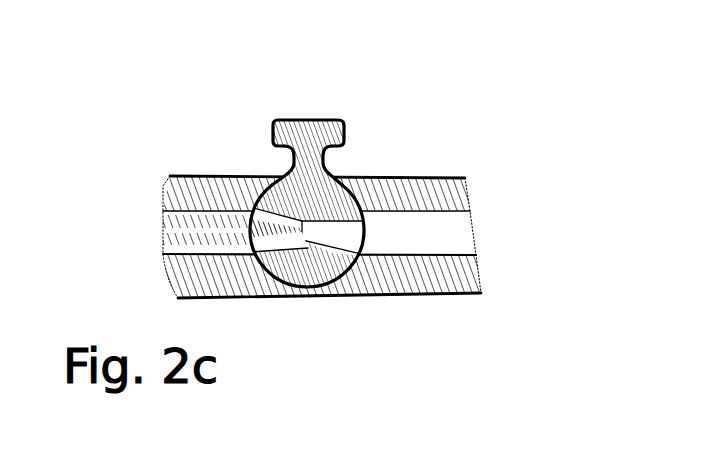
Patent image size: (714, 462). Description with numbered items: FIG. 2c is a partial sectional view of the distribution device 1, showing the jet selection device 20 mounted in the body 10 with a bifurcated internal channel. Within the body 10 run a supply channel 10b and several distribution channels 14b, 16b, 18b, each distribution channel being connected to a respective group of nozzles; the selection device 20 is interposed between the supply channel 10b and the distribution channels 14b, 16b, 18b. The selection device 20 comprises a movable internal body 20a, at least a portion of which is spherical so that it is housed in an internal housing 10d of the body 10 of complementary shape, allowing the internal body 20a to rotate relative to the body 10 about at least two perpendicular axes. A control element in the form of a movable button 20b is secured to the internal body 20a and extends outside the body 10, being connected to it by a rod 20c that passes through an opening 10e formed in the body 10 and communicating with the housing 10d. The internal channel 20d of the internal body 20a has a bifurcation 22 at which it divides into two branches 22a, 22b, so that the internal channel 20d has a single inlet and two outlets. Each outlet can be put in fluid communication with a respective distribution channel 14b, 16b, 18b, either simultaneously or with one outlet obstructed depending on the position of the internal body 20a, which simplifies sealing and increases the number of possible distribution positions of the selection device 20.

The distribution device 1 is at (162, 90).
The body 10 is at (272, 248).
The supply channel 10b is at (427, 230).
The internal housing 10d is at (430, 262).
The opening 10e is at (337, 170).
The distribution channel 14b is at (213, 253).
The distribution channel 16b is at (170, 230).
The distribution channel 18b is at (207, 212).
The jet selection device 20 is at (297, 212).
The movable internal body 20a is at (316, 287).
The control element 20b is at (289, 114).
The rod 20c is at (285, 161).
The internal channel 20d is at (375, 235).
The bifurcation 22 is at (304, 250).
The branch 22a is at (268, 252).
The branch 22b is at (260, 213).